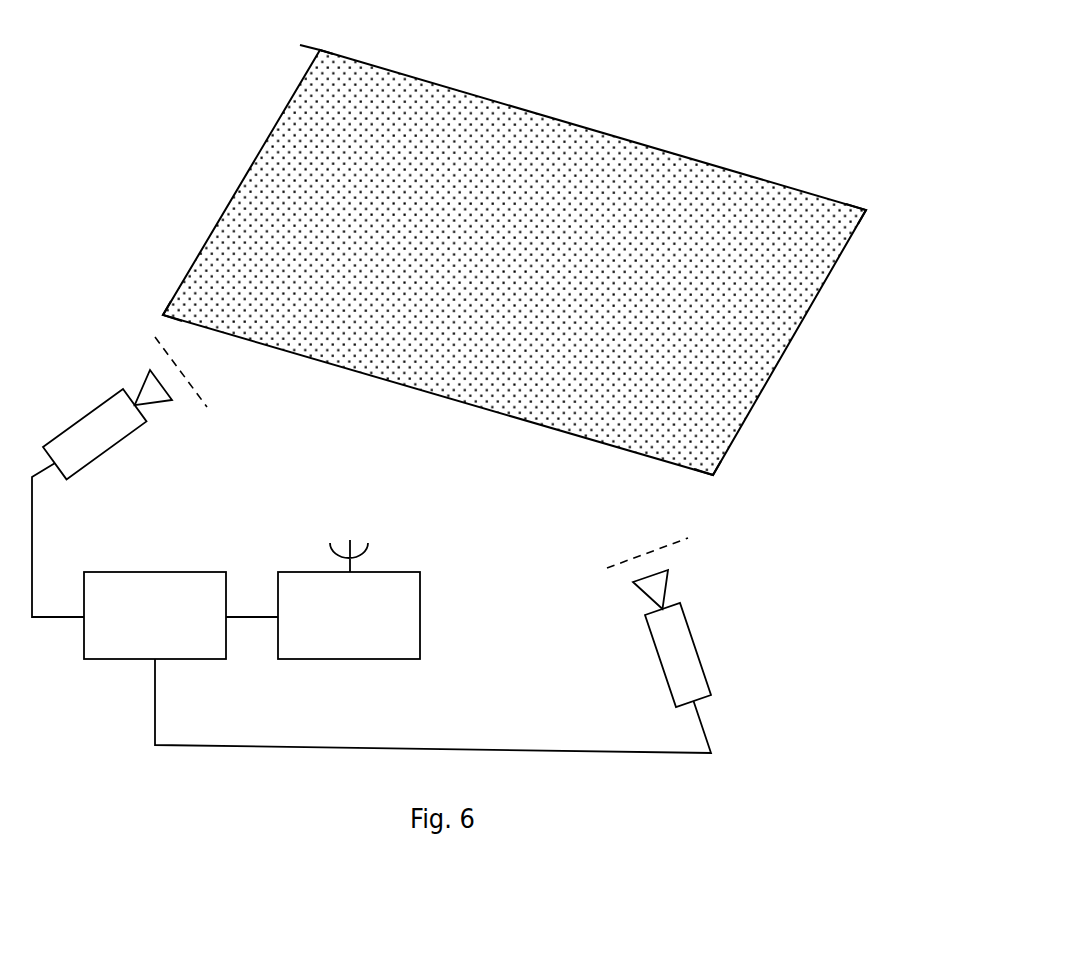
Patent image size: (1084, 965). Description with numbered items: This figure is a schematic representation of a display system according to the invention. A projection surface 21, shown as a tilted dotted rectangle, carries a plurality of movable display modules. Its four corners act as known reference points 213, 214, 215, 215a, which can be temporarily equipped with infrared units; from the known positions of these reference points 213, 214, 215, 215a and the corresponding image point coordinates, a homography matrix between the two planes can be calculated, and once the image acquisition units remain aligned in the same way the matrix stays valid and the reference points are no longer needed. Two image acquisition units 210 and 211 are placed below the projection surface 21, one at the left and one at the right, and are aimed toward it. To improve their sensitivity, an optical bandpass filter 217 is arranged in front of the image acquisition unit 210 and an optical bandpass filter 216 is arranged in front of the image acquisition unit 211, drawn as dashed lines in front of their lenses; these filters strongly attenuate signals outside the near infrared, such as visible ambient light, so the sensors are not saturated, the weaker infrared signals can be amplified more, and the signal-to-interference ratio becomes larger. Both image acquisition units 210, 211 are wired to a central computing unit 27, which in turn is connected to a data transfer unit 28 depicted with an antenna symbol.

The projection surface 21 is at (642, 143).
The reference point 214 is at (322, 48).
The reference point 215 is at (868, 210).
The reference point 215a is at (717, 477).
The reference point 213 is at (160, 313).
The image acquisition unit 210 is at (93, 410).
The image acquisition unit 211 is at (698, 648).
The optical bandpass filter 217 is at (202, 398).
The optical bandpass filter 216 is at (620, 560).
The central computing unit 27 is at (155, 615).
The data transfer unit 28 is at (349, 599).